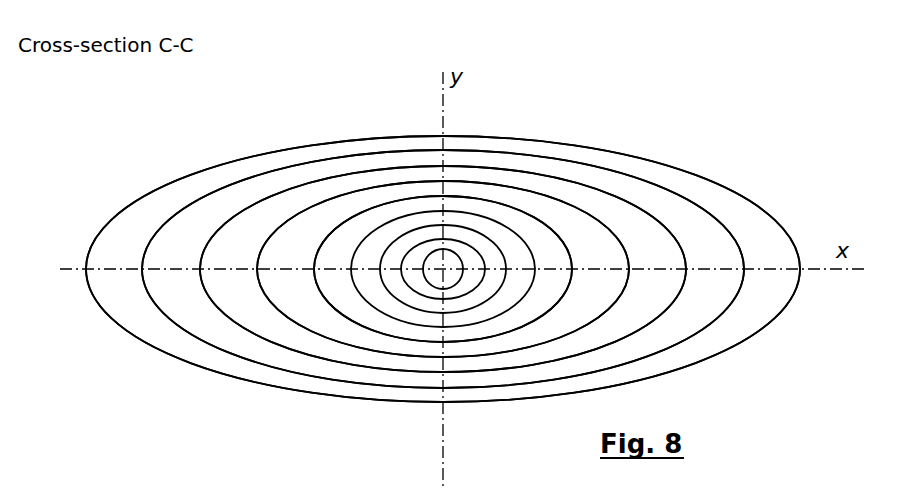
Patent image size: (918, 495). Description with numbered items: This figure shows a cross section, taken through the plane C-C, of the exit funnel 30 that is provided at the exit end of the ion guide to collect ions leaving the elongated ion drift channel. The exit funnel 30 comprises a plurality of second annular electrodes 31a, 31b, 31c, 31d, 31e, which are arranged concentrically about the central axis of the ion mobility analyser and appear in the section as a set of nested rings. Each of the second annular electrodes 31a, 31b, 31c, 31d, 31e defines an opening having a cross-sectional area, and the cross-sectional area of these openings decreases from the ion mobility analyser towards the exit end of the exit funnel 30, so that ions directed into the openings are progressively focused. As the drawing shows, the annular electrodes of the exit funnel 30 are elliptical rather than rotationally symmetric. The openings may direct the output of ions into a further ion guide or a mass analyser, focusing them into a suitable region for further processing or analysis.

The exit funnel 30 is at (664, 163).
The second annular electrode 31a is at (744, 212).
The second annular electrode 31b is at (705, 317).
The second annular electrode 31c is at (618, 330).
The second annular electrode 31d is at (360, 333).
The second annular electrode 31e is at (352, 305).